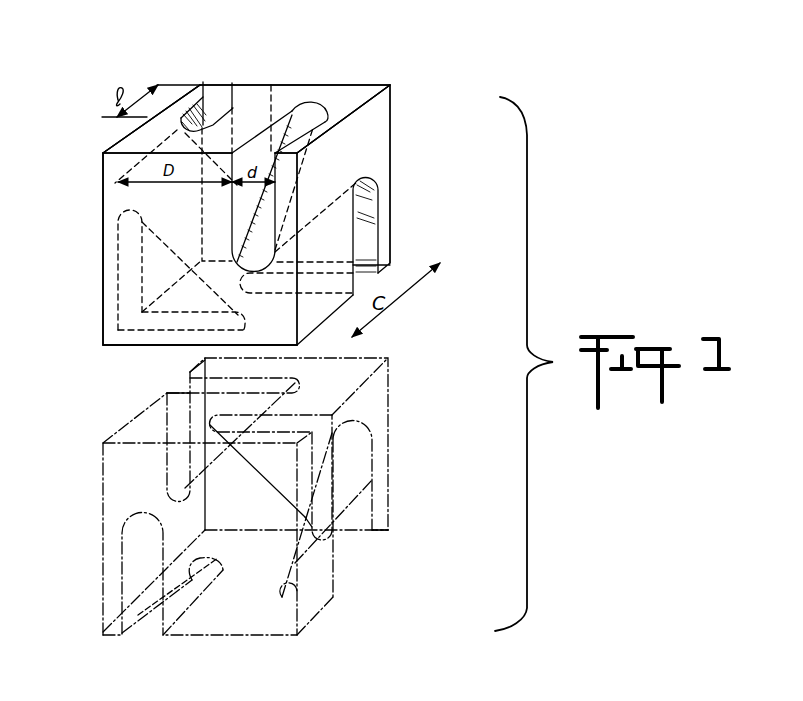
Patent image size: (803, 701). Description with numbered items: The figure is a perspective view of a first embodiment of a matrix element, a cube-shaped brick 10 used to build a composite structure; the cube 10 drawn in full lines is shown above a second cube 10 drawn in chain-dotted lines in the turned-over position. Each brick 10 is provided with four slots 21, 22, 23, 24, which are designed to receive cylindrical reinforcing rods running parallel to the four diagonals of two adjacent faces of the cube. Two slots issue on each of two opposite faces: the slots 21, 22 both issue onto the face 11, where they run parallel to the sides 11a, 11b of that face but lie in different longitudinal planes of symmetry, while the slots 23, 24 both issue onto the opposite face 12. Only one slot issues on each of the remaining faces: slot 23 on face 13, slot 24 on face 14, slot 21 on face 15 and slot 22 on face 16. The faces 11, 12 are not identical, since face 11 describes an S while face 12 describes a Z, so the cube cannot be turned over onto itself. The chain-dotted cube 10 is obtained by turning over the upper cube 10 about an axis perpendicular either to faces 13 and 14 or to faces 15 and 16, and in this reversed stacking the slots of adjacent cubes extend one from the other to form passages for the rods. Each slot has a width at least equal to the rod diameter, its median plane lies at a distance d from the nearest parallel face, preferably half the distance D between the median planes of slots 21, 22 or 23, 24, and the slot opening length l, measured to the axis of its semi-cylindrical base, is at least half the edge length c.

The cube-shaped brick 10 is at (395, 127).
The face 11 is at (358, 95).
The side of face 11a is at (106, 144).
The side of face 11b is at (384, 101).
The face 12 is at (167, 338).
The face 13 is at (366, 159).
The face 14 is at (103, 207).
The face 15 is at (355, 137).
The face 16 is at (170, 208).
The slot 21 is at (238, 98).
The slot 22 is at (307, 123).
The slot 23 is at (363, 232).
The slot 24 is at (125, 277).